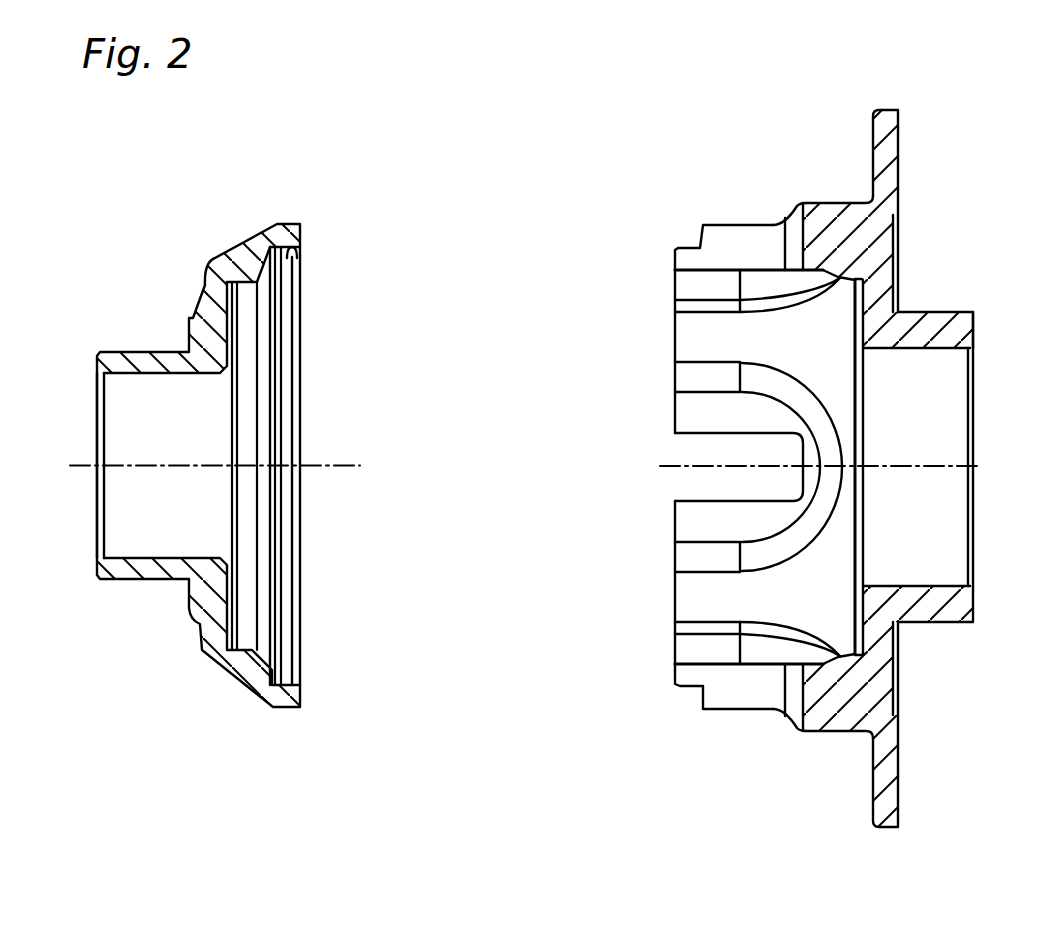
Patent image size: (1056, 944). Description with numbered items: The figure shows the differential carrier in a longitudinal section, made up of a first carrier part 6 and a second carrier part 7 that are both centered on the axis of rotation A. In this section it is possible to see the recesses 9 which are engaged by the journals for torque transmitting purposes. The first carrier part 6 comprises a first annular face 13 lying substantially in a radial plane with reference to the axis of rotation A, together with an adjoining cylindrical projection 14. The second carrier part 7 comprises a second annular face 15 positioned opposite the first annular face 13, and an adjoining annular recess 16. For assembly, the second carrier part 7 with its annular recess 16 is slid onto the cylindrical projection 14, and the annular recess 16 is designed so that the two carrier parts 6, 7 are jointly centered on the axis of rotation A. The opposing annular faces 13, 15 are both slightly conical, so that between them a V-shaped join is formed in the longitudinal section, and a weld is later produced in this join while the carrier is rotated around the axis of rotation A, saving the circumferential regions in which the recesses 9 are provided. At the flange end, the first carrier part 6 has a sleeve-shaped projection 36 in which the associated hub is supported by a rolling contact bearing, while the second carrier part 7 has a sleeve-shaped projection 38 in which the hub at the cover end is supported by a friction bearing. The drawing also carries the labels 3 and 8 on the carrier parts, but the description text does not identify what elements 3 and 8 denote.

The tube 3 is at (148, 350).
The first carrier part 6 is at (887, 226).
The second carrier part 7 is at (222, 257).
The flange 8 is at (888, 146).
The recesses 9 is at (690, 438).
The first annular face 13 is at (700, 231).
The cylindrical projection 14 is at (683, 246).
The second annular face 15 is at (302, 230).
The annular recess 16 is at (299, 254).
The sleeve-shaped projection 36 is at (962, 330).
The sleeve-shaped projection 38 is at (123, 360).
The axis of rotation A is at (938, 464).